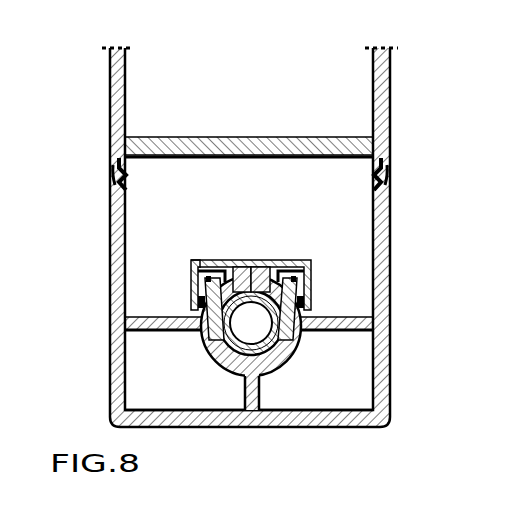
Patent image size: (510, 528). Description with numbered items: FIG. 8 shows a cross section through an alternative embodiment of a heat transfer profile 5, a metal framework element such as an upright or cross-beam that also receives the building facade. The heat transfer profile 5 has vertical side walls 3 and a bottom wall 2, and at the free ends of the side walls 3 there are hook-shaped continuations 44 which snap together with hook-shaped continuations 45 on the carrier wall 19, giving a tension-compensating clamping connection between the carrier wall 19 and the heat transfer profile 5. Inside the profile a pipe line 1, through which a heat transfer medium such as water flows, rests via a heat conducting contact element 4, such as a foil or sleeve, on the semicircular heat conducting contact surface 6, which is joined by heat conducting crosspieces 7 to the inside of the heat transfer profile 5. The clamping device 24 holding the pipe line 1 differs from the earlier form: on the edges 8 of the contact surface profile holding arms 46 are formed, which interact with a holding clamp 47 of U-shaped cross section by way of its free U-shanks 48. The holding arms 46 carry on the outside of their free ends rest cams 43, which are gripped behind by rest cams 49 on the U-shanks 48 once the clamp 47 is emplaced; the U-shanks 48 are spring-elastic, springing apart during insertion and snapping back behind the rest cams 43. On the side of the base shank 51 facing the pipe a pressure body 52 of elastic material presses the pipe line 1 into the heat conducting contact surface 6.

The pipe line 1 is at (250, 368).
The bottom wall 2 is at (345, 430).
The vertical side walls 3 is at (110, 218).
The heat conducting contact element 4 is at (218, 352).
The heat transfer profile 5 is at (258, 263).
The heat conducting contact surface 6 is at (283, 358).
The heat conducting crosspieces 7 is at (130, 333).
The edges 8 is at (208, 323).
The carrier wall 19 is at (223, 142).
The clamping device 24 is at (254, 261).
The rest cams 43 is at (313, 276).
The hook-shaped continuations 44 is at (128, 168).
The hook-shaped continuations 45 is at (112, 176).
The holding arms 46 is at (313, 308).
The holding clamp 47 is at (196, 262).
The free U-shanks 48 is at (192, 276).
The rest cams 49 is at (192, 303).
The base shank 51 is at (245, 266).
The pressure body 52 is at (262, 266).